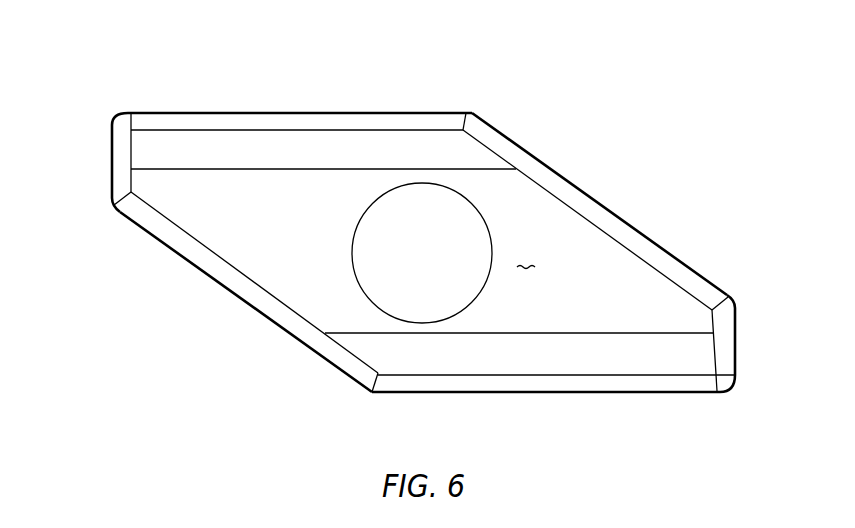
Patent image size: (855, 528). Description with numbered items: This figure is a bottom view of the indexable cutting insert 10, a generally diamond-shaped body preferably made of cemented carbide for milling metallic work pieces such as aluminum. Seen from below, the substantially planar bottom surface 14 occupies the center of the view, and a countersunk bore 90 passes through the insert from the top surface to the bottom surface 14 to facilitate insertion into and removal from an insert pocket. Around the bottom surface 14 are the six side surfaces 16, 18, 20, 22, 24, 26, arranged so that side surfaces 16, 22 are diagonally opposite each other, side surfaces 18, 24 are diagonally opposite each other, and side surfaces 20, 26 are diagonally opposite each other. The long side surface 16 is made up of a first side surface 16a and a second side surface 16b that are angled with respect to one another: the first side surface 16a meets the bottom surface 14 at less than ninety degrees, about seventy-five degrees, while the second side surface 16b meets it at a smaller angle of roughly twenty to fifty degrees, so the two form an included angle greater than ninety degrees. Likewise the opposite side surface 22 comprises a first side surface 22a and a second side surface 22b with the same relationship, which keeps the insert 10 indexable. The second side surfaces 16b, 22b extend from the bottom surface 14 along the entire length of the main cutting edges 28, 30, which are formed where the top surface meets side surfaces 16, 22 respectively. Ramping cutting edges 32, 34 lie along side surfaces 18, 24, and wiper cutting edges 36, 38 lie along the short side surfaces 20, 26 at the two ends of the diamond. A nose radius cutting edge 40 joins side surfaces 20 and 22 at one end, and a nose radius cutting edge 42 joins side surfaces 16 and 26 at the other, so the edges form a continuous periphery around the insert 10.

The indexable cutting insert 10 is at (603, 86).
The bottom surface 14 is at (527, 256).
The side surface 16 is at (393, 122).
The first side surface 16a is at (286, 125).
The second side surface 16b is at (313, 151).
The side surface 18 is at (582, 188).
The side surface 20 is at (742, 338).
The side surface 22 is at (546, 360).
The first side surface 22a is at (601, 380).
The second side surface 22b is at (557, 342).
The side surface 24 is at (229, 315).
The side surface 26 is at (100, 157).
The main cutting edge 28 is at (220, 111).
The main cutting edge 30 is at (633, 393).
The ramping cutting edge 32 is at (663, 241).
The ramping cutting edge 34 is at (208, 278).
The wiper cutting edge 36 is at (738, 318).
The wiper cutting edge 38 is at (108, 175).
The nose radius cutting edge 40 is at (729, 389).
The nose radius cutting edge 42 is at (118, 113).
The countersunk bore 90 is at (352, 240).